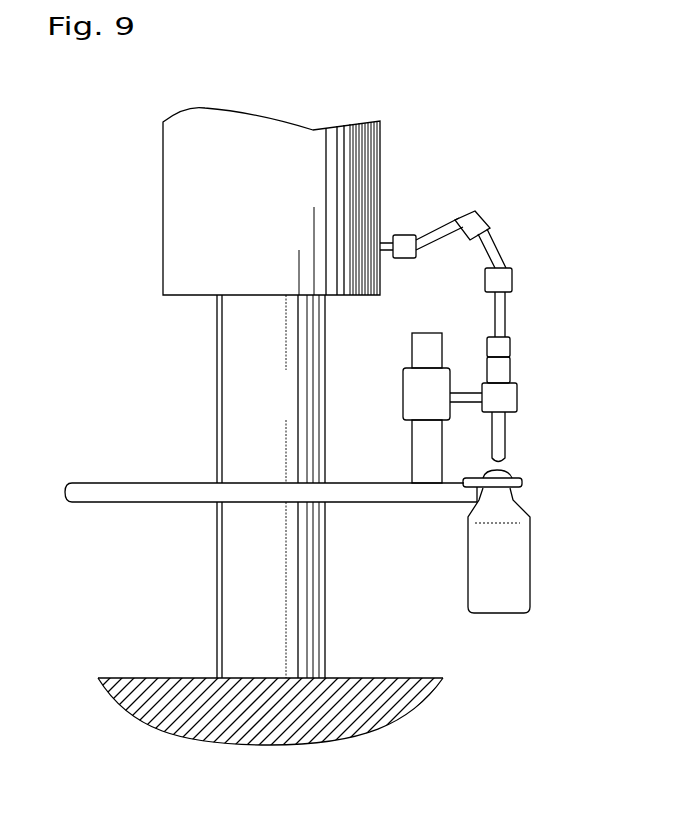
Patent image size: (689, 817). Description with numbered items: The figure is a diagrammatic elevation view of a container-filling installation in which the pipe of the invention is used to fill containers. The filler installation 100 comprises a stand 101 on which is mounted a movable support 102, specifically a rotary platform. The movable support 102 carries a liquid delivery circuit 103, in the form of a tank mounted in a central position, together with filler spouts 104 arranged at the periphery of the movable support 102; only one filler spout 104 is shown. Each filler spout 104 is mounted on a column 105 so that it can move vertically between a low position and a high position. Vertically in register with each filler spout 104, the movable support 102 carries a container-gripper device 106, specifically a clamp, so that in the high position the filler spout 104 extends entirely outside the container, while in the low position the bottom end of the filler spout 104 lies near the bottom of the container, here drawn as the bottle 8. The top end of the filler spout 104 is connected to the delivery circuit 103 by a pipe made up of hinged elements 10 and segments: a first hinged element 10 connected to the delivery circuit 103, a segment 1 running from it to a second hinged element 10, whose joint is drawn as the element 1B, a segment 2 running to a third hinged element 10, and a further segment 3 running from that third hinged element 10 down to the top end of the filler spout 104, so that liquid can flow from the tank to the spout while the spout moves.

The filler installation 100 is at (148, 527).
The stand 101 is at (393, 678).
The movable support 102 is at (95, 483).
The liquid delivery circuit 103 is at (163, 262).
The filler spout 104 is at (507, 438).
The column 105 is at (428, 333).
The container-gripper device 106 is at (527, 482).
The hinged element 10 is at (403, 235).
The segment 1 is at (443, 228).
The joint 1B is at (482, 212).
The segment 2 is at (497, 246).
The third arm 3 is at (508, 318).
The container 8 is at (522, 562).